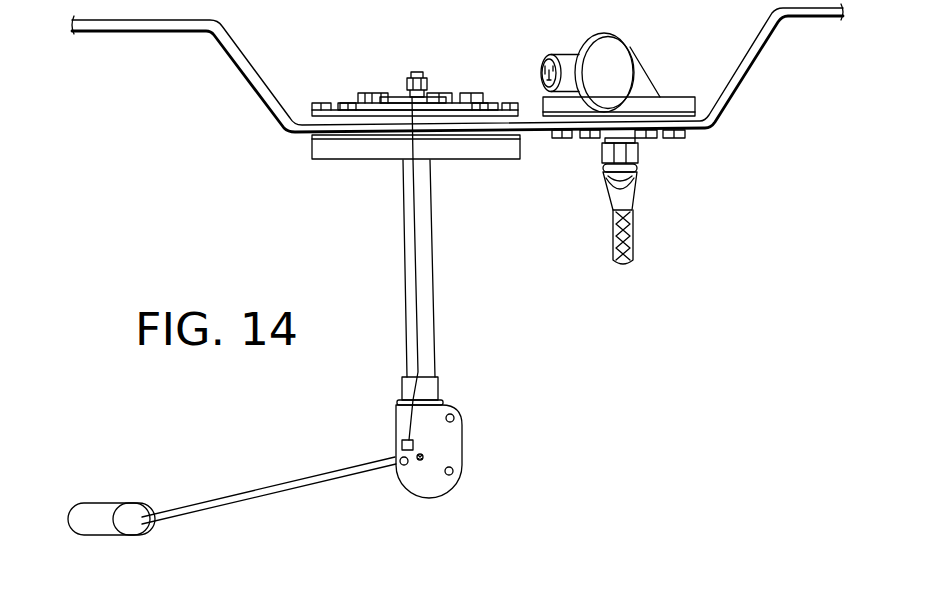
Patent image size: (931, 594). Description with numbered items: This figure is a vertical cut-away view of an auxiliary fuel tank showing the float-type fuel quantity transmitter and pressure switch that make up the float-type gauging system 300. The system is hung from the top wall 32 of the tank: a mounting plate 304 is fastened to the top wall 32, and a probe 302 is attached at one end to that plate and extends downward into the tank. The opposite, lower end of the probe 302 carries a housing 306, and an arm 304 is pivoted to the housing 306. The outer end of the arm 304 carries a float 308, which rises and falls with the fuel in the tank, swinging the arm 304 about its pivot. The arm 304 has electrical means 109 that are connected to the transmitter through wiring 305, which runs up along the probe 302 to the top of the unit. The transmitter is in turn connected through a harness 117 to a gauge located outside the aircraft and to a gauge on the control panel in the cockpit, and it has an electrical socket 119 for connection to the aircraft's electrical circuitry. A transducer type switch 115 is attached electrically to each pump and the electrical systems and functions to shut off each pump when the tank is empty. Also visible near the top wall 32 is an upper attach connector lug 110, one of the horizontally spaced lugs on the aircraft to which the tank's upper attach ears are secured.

The top wall 32 is at (720, 103).
The electrical means 109 is at (402, 440).
The upper attach connector lug 110 is at (652, 63).
The transducer type switch 115 is at (372, 93).
The harness 117 is at (633, 242).
The electrical socket 119 is at (576, 62).
The float-type gauging system 300 is at (388, 78).
The probe 302 is at (423, 300).
The mounting plate / arm 304 is at (322, 144).
The wiring 305 is at (415, 245).
The housing 306 is at (445, 447).
The float 308 is at (133, 537).